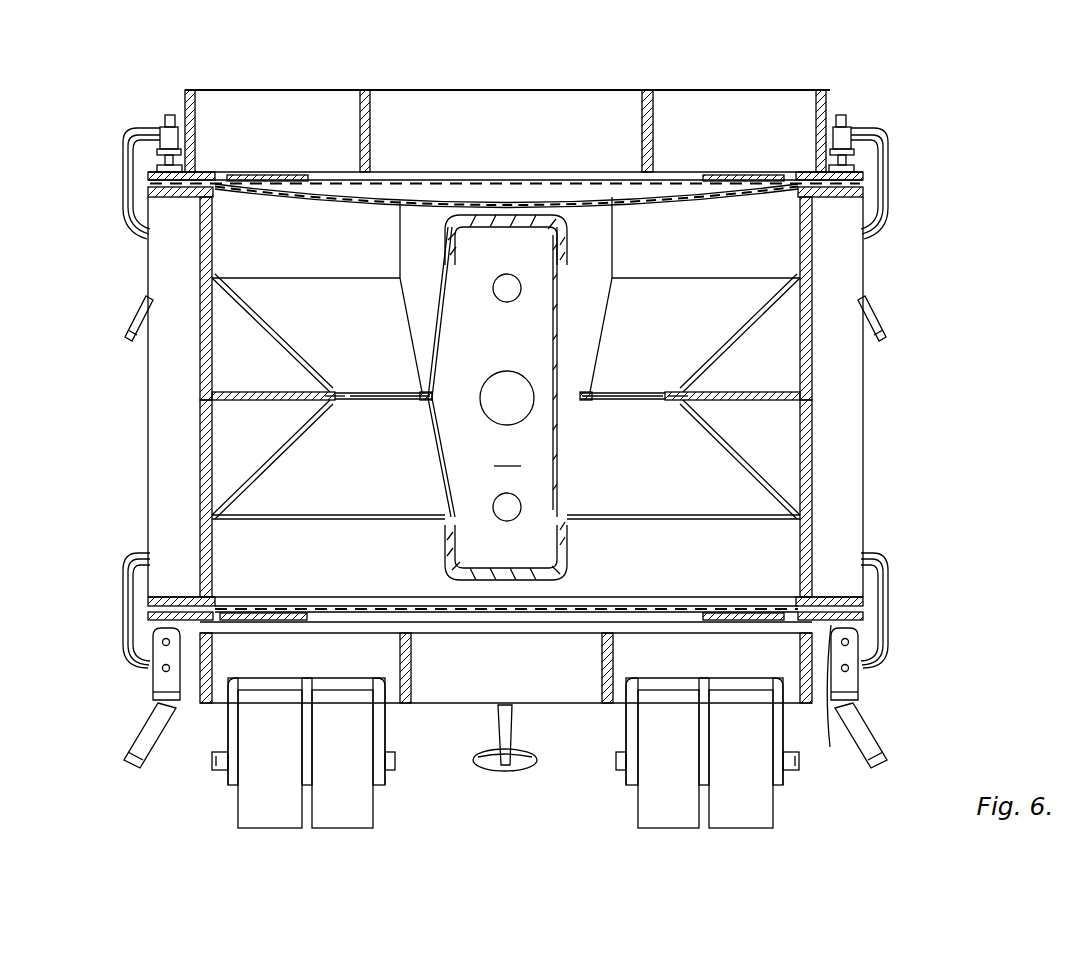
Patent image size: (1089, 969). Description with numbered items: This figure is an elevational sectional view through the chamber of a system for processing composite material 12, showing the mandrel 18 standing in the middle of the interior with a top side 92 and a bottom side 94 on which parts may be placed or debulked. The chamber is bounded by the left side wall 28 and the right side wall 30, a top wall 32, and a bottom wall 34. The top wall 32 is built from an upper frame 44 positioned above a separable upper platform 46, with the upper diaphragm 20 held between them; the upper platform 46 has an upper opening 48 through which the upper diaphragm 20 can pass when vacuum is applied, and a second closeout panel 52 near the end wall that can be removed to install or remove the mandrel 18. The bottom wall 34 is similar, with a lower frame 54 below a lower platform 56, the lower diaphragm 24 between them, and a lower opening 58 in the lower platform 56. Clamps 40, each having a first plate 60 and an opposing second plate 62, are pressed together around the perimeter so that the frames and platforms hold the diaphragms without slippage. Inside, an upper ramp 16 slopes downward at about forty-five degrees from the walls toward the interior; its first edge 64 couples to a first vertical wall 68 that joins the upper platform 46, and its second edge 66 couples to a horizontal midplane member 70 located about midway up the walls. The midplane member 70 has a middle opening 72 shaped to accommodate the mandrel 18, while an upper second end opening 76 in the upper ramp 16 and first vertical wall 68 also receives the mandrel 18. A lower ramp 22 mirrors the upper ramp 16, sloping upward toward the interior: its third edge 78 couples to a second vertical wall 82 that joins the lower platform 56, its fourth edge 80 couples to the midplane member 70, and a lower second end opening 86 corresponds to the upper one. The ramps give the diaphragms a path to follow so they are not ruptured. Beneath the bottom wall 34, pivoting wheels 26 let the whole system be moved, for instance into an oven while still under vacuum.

The composite material 12 is at (560, 245).
The upper ramp 16 is at (212, 342).
The mandrel 18 is at (507, 397).
The upper diaphragm 20 is at (372, 199).
The lower ramp 22 is at (280, 445).
The lower diaphragm 24 is at (405, 605).
The wheels 26 is at (362, 818).
The left side wall 28 is at (205, 460).
The right side wall 30 is at (812, 518).
The top wall 32 is at (503, 80).
The bottom wall 34 is at (590, 722).
The clamps 40 is at (880, 140).
The upper frame 44 is at (675, 105).
The upper platform 46 is at (178, 196).
The upper opening 48 is at (438, 192).
The second closeout panel 52 is at (590, 297).
The lower frame 54 is at (848, 612).
The lower platform 56 is at (185, 598).
The lower opening 58 is at (660, 622).
The first plate 60 is at (862, 183).
The second plate 62 is at (828, 700).
The first edge 64 is at (215, 280).
The second edge 66 is at (330, 390).
The first vertical wall 68 is at (213, 242).
The midplane member 70 is at (210, 394).
The middle opening 72 is at (400, 408).
The upper second end opening 76 is at (592, 380).
The third edge 78 is at (215, 520).
The fourth edge 80 is at (330, 405).
The second vertical wall 82 is at (213, 570).
The lower second end opening 86 is at (558, 412).
The top side 92 is at (440, 260).
The bottom side 94 is at (430, 537).